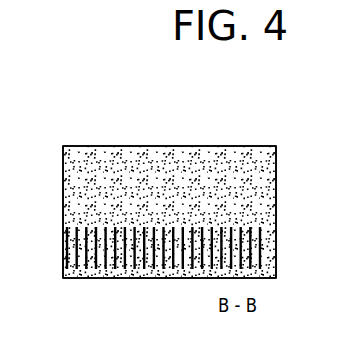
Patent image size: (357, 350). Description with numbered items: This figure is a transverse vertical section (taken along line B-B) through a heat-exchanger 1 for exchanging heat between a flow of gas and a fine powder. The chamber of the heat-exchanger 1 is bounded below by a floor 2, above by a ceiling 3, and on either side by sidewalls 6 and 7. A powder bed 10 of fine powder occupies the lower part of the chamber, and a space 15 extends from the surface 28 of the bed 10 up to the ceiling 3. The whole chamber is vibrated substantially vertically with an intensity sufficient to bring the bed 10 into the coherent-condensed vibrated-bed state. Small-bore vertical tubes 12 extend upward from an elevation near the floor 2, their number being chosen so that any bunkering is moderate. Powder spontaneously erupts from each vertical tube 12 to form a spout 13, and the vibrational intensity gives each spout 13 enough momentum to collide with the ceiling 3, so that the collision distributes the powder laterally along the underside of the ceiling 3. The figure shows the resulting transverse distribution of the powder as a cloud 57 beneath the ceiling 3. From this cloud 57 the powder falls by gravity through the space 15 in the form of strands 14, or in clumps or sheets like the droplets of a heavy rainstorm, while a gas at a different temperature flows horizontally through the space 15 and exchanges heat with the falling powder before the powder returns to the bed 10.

The heat-exchanger 1 is at (185, 133).
The floor 2 is at (118, 278).
The ceiling 3 is at (78, 147).
The sidewall 6 is at (63, 163).
The sidewall 7 is at (272, 161).
The powder bed 10 is at (64, 262).
The vertical tubes 12 is at (74, 233).
The spout 13 is at (72, 196).
The strands 14 is at (63, 205).
The space 15 is at (276, 190).
The surface of bed 28 is at (276, 228).
The cloud of powder 57 is at (119, 165).